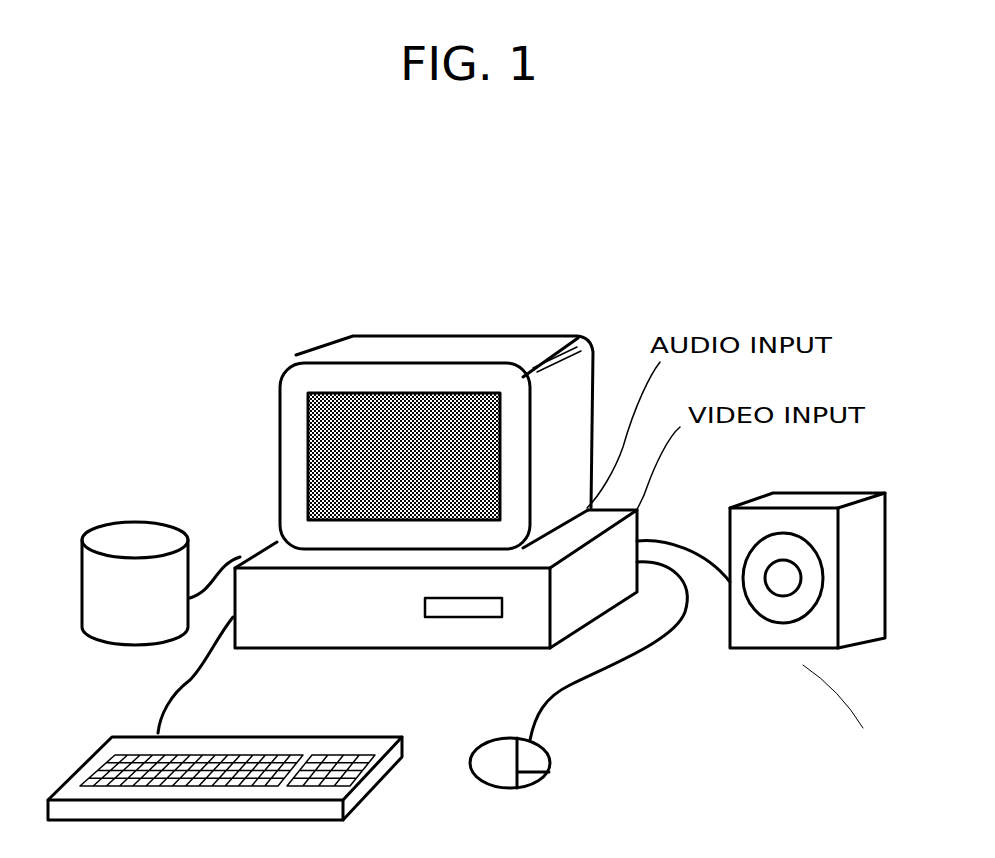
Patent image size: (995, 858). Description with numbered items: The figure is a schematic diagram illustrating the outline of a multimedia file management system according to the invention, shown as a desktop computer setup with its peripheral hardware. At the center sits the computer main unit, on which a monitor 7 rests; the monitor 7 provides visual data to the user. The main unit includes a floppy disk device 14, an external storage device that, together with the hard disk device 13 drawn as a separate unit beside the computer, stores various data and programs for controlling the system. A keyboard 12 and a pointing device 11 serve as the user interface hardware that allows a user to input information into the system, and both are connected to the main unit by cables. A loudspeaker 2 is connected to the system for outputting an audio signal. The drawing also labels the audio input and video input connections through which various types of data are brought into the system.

The monitor 7 is at (523, 333).
The floppy disk device 14 is at (452, 617).
The hard disk device 13 is at (148, 533).
The keyboard 12 is at (240, 733).
The pointing device 11 is at (550, 752).
The loudspeaker 2 is at (772, 650).